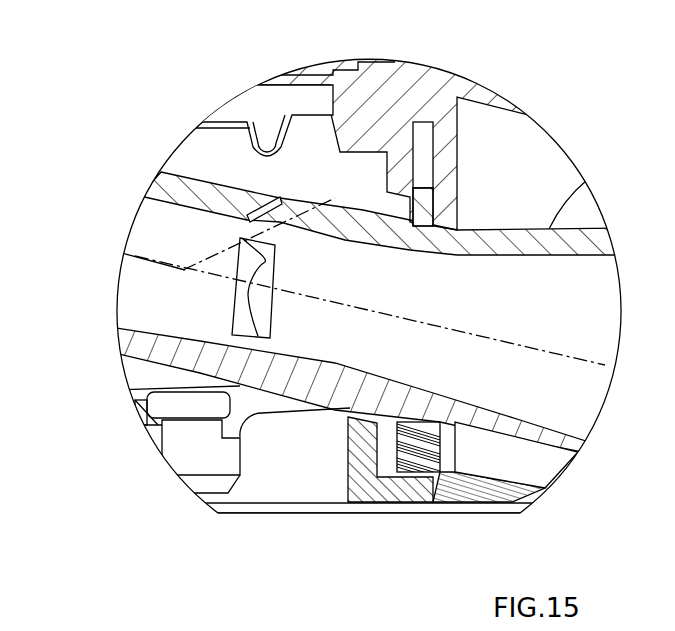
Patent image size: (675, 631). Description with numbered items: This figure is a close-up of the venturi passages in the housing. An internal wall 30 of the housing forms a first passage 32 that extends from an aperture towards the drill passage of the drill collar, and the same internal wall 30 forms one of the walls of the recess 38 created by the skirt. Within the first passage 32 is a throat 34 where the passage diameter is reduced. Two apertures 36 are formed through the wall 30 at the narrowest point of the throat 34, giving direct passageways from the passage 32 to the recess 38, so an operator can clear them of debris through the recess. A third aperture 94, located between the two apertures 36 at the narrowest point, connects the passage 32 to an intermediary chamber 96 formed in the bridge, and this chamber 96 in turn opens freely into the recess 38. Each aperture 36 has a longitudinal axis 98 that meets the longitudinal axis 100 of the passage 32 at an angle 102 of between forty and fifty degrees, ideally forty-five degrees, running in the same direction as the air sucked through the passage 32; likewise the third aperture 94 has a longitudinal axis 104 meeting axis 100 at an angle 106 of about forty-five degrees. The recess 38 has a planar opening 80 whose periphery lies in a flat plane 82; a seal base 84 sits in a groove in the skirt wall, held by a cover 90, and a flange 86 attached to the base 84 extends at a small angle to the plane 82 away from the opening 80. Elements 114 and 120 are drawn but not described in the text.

The internal wall 30 is at (347, 240).
The first passage 32 is at (173, 256).
The throat 34 is at (178, 326).
The apertures 36 is at (245, 313).
The recess 38 is at (295, 458).
The opening 80 is at (322, 500).
The flat plane 82 is at (262, 515).
The base 84 is at (417, 458).
The flange 86 is at (507, 487).
The cover 90 is at (358, 490).
The third aperture 94 is at (316, 202).
The intermediary chamber 96 is at (329, 176).
The longitudinal axis 98 is at (298, 262).
The longitudinal axis 100 is at (493, 337).
The angle 102 is at (245, 270).
The longitudinal axis 104 is at (297, 205).
The angle 106 is at (216, 272).
The cap 114 is at (303, 98).
The retaining clip 120 is at (194, 116).